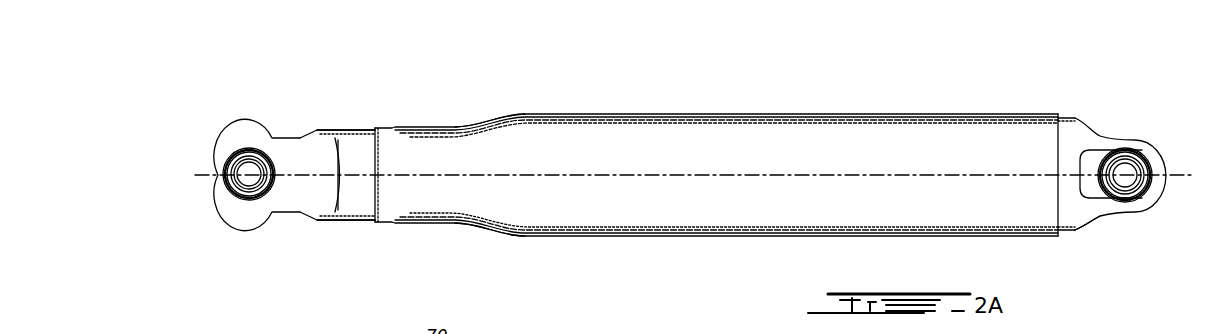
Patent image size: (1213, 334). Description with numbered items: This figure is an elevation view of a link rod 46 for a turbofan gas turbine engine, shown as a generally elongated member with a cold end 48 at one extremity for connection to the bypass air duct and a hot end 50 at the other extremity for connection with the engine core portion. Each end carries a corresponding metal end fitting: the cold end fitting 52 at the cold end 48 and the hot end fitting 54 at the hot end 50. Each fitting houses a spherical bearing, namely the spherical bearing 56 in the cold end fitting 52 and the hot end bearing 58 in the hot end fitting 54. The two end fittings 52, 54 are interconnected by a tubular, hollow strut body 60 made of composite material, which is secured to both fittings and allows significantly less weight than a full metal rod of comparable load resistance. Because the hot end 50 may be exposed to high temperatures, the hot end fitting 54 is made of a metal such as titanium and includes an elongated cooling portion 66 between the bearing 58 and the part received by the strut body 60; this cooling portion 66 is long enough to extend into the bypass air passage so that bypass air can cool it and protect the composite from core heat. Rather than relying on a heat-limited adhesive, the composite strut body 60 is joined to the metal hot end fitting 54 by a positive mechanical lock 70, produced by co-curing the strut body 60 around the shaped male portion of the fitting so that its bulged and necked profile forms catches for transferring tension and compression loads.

The link rod 46 is at (978, 96).
The cold end 48 is at (1108, 94).
The hot end 50 is at (257, 118).
The end fitting 52 is at (1090, 228).
The hot end fitting 54 is at (338, 118).
The spherical bearing 56 is at (1133, 184).
The hot end bearing 58 is at (250, 182).
The strut body 60 is at (813, 128).
The elongated cooling portion 66 is at (360, 150).
The positive mechanical lock 70 is at (440, 105).